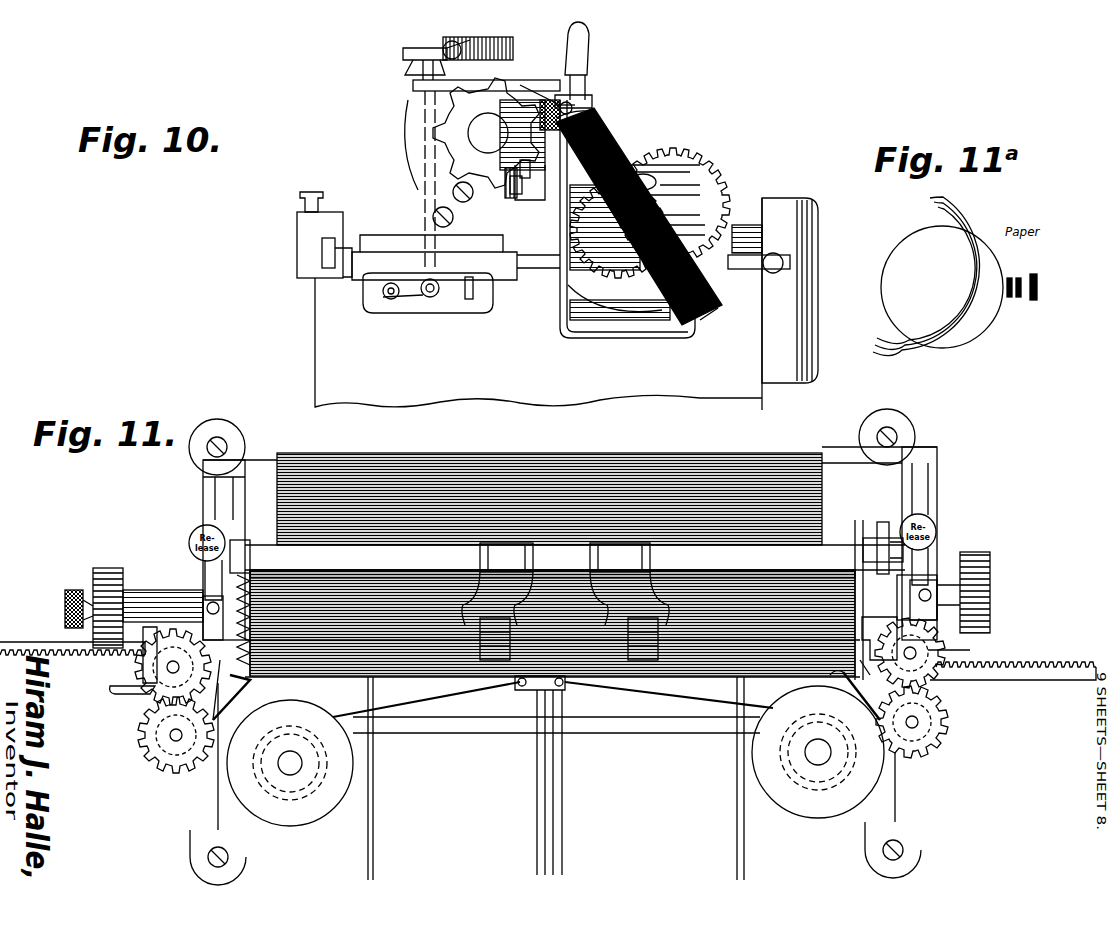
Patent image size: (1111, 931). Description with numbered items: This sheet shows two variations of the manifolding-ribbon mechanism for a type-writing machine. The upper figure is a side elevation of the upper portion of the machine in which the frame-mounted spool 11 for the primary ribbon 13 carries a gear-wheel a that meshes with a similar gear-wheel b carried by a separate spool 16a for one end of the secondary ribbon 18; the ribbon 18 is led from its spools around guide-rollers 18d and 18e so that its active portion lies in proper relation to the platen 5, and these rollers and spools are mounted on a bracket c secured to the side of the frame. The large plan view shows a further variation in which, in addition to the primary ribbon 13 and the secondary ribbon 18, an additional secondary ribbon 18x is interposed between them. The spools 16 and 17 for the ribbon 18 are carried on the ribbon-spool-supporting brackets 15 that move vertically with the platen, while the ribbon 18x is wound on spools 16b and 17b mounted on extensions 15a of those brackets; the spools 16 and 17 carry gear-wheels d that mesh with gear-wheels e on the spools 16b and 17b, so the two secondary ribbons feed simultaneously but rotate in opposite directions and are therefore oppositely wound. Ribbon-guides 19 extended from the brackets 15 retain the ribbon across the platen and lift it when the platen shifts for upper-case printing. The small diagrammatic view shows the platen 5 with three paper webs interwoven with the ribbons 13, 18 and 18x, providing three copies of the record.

In FIG. 11A, the platen 5 is at (904, 258).
In FIG. 10, the ribbon-spool 11 is at (728, 210).
In FIG. 11A, the primary ribbon 13 is at (1040, 284).
In FIG. 11, the primary ribbon 13 is at (430, 703).
In FIG. 11, the ribbon-spool-supporting bracket 15 is at (160, 600).
In FIG. 11, the bracket extension 15a is at (150, 712).
In FIG. 11, the ribbon-spool 16 is at (192, 685).
In FIG. 10, the ribbon-spool 16a is at (725, 280).
In FIG. 11, the ribbon-spool 16b is at (175, 755).
In FIG. 11, the ribbon-spool 17 is at (940, 648).
In FIG. 11, the ribbon-spool 17b is at (921, 745).
In FIG. 10, the secondary ribbon 18 is at (614, 155).
In FIG. 11A, the secondary ribbon 18 is at (1012, 312).
In FIG. 11, the secondary ribbon 18 is at (340, 668).
In FIG. 10, the guide-roller 18d is at (722, 313).
In FIG. 10, the guide-roller 18e is at (590, 118).
In FIG. 11A, the additional secondary ribbon 18x is at (1021, 300).
In FIG. 11, the additional secondary ribbon 18x is at (388, 668).
In FIG. 10, the ribbon-guide 19 is at (566, 108).
In FIG. 10, the gear-wheel a is at (673, 205).
In FIG. 10, the gear-wheel b is at (636, 247).
In FIG. 10, the bracket c is at (621, 325).
In FIG. 11, the gear-wheel d is at (138, 671).
In FIG. 11, the gear-wheel e is at (150, 752).